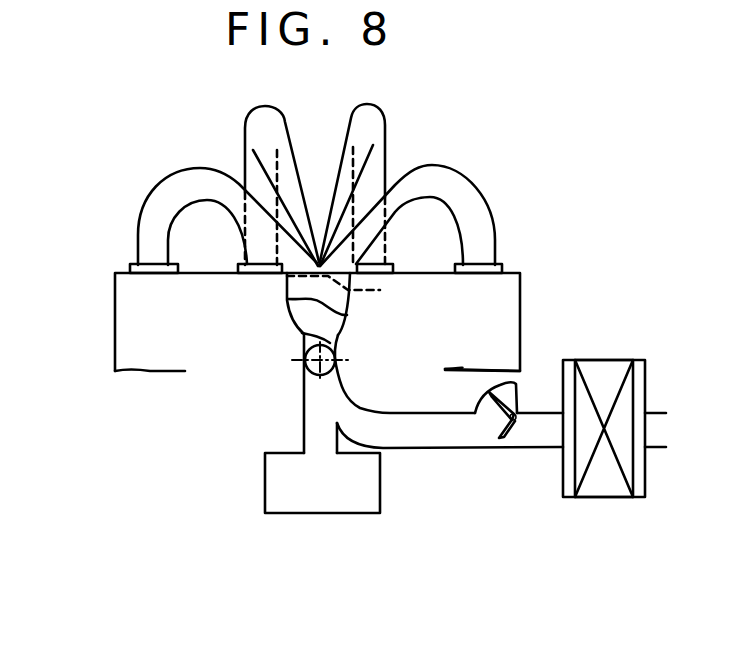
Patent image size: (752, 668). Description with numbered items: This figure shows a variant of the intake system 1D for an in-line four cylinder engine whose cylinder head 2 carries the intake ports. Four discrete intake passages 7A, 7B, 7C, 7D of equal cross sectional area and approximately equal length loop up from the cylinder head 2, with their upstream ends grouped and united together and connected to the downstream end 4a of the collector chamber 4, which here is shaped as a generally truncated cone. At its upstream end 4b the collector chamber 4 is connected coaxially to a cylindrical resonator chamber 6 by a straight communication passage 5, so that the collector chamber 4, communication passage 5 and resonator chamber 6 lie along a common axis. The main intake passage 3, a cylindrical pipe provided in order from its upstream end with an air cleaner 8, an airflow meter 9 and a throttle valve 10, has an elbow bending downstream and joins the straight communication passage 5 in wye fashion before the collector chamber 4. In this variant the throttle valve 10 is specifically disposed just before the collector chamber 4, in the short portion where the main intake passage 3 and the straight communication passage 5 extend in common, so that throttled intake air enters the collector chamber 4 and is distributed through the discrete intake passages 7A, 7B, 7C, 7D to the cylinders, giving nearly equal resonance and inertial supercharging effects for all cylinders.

The intake system 1D is at (555, 218).
The cylinder head 2 is at (112, 328).
The main intake passage 3 is at (447, 449).
The collector chamber 4 is at (287, 297).
The downstream end of the collector chamber 4a is at (350, 294).
The upstream end of the collector chamber 4b is at (340, 328).
The communication passage 5 is at (304, 434).
The resonator chamber 6 is at (327, 513).
The first discrete intake passage 7A is at (460, 173).
The second discrete intake passage 7B is at (386, 127).
The third discrete intake passage 7C is at (243, 140).
The fourth discrete intake passage 7D is at (143, 218).
The air cleaner 8 is at (600, 498).
The airflow meter 9 is at (513, 434).
The throttle valve 10 is at (307, 333).